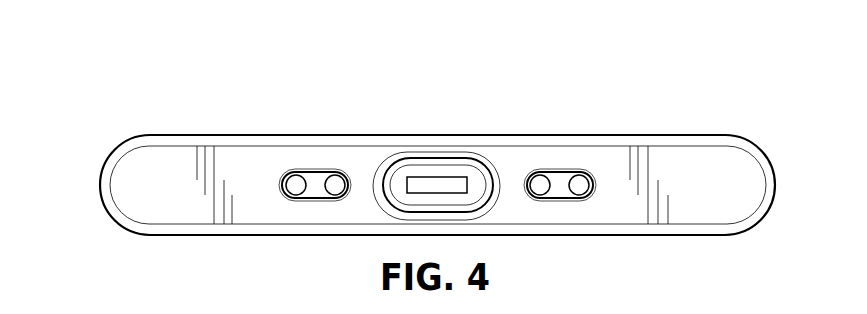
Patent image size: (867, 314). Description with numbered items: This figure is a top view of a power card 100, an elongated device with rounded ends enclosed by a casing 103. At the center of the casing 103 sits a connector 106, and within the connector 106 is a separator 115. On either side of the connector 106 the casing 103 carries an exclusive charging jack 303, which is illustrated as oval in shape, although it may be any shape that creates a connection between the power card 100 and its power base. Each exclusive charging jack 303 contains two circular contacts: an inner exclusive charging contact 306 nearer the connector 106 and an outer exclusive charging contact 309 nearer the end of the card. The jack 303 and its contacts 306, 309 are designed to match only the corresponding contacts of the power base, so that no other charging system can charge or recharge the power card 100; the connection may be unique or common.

The power card 100 is at (678, 86).
The casing 103 is at (100, 185).
The connector 106 is at (430, 183).
The separator 115 is at (478, 180).
The exclusive charging jack 303 is at (317, 182).
The inner exclusive charging contact 306 is at (335, 183).
The outer exclusive charging contact 309 is at (294, 183).